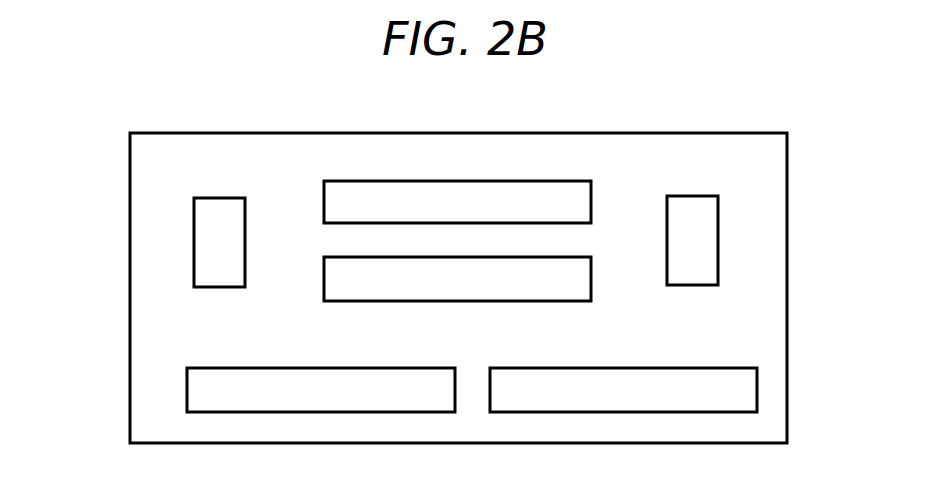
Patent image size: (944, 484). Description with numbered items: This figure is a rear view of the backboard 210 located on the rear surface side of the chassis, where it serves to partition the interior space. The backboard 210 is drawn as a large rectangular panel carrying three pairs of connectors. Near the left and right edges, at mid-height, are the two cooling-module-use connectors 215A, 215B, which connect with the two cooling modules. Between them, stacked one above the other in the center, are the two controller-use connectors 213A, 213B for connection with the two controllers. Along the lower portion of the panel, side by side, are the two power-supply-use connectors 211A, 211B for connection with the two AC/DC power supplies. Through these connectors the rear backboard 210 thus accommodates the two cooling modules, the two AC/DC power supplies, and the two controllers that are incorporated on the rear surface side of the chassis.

The backboard 210 is at (128, 318).
The power-supply-use connector 211A is at (187, 388).
The power-supply-use connector 211B is at (757, 388).
The controller-use connector 213A is at (545, 181).
The controller-use connector 213B is at (541, 301).
The cooling-module-use connector 215A is at (194, 242).
The cooling-module-use connector 215B is at (718, 241).